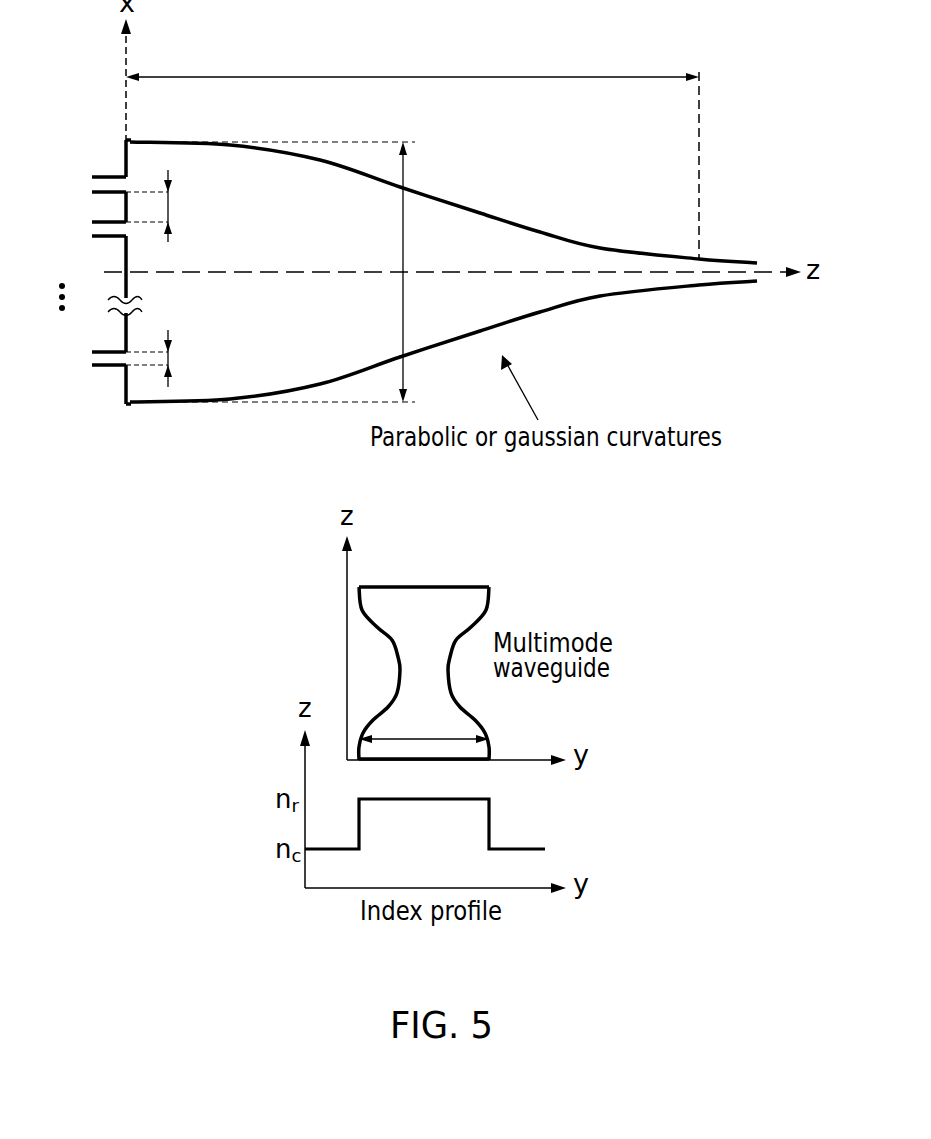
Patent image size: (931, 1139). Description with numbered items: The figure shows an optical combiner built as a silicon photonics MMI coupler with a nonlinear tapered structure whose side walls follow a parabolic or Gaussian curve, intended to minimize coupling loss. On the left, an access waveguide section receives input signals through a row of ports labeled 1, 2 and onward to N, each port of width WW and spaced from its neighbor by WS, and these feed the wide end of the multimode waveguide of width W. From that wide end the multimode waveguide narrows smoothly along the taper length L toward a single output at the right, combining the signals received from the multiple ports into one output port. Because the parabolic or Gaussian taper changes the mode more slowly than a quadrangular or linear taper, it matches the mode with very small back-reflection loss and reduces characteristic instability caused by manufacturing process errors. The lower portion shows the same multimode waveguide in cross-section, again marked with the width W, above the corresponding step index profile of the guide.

The first input waveguide port 1 is at (91, 187).
The second input waveguide port 2 is at (91, 230).
The N-th input waveguide port N is at (90, 357).
The taper length L is at (412, 63).
The waveguide width W is at (310, 442).
The waveguide spacing WS is at (173, 206).
The waveguide width of input port WW is at (175, 358).